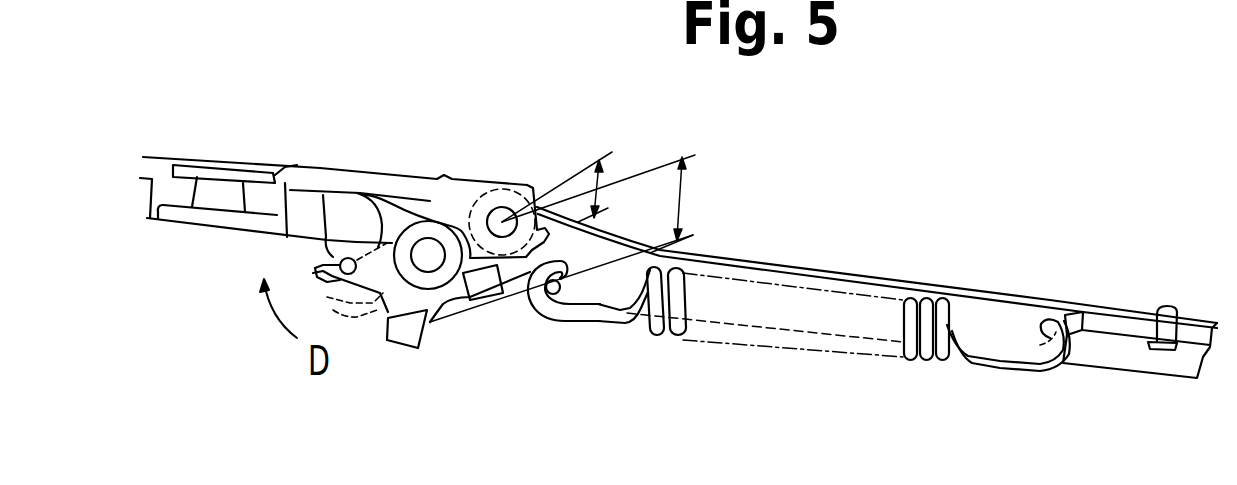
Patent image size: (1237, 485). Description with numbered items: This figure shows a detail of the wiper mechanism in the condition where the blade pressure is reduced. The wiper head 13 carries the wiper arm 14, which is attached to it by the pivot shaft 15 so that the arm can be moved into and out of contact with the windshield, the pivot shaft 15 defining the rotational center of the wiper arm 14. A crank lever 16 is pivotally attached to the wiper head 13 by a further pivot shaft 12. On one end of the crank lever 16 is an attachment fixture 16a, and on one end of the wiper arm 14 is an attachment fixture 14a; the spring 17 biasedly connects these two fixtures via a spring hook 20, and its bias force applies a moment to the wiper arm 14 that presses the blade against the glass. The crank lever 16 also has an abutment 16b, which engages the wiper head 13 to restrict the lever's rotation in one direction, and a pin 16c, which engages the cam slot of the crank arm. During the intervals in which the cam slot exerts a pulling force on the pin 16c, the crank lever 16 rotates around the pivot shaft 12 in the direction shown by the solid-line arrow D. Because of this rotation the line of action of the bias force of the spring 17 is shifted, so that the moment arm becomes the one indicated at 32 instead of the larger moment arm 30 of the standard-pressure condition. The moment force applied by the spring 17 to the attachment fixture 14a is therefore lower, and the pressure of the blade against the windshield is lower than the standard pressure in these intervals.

The pivot shaft 12 is at (427, 243).
The wiper head 13 is at (458, 188).
The wiper arm 14 is at (897, 280).
The attachment fixture 14a is at (1120, 317).
The pivot shaft 15 is at (502, 220).
The crank lever 16 is at (388, 246).
The attachment fixture 16a is at (340, 258).
The abutment 16b is at (492, 317).
The pin 16c is at (403, 335).
The spring 17 is at (995, 362).
The spring hook 20 is at (458, 317).
The moment arm 30 is at (680, 213).
The moment arm 32 is at (610, 181).